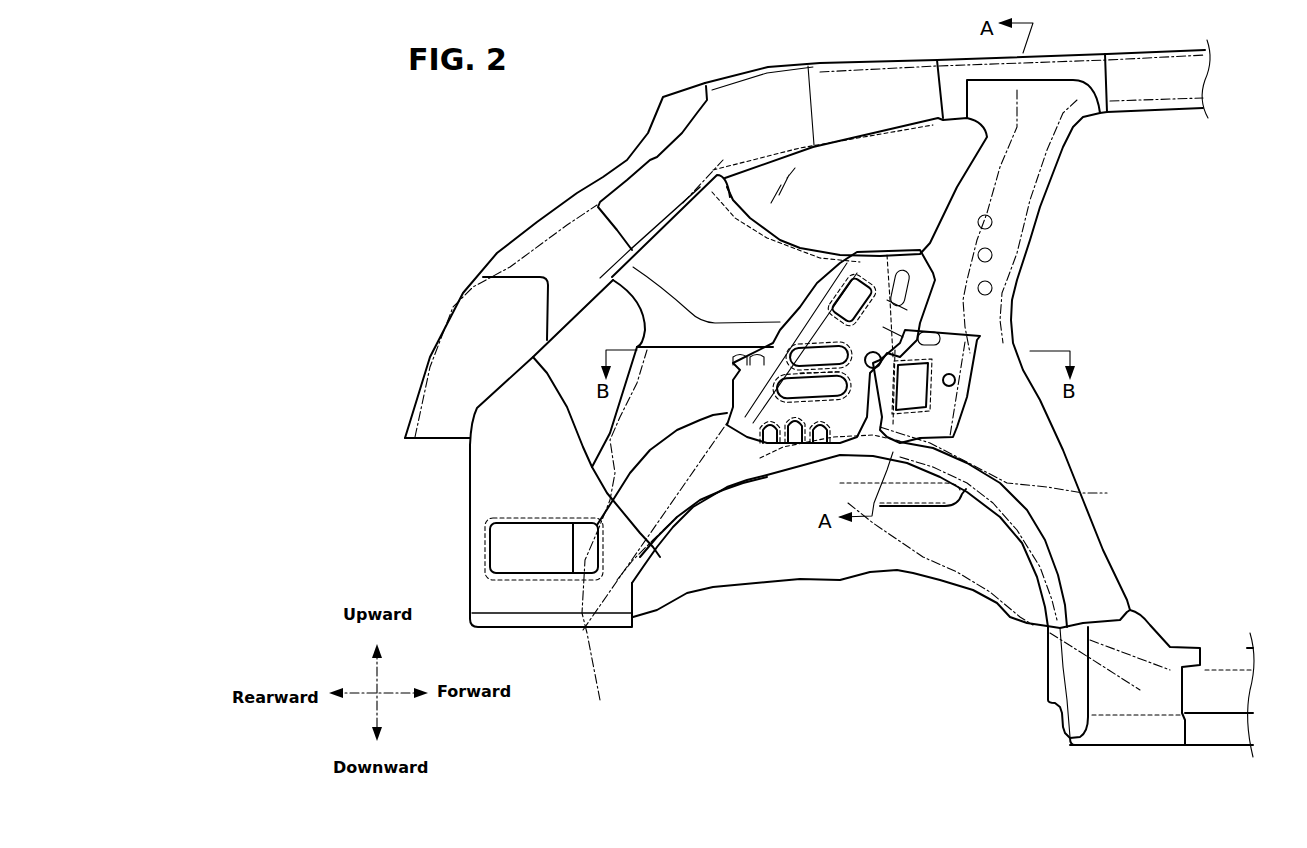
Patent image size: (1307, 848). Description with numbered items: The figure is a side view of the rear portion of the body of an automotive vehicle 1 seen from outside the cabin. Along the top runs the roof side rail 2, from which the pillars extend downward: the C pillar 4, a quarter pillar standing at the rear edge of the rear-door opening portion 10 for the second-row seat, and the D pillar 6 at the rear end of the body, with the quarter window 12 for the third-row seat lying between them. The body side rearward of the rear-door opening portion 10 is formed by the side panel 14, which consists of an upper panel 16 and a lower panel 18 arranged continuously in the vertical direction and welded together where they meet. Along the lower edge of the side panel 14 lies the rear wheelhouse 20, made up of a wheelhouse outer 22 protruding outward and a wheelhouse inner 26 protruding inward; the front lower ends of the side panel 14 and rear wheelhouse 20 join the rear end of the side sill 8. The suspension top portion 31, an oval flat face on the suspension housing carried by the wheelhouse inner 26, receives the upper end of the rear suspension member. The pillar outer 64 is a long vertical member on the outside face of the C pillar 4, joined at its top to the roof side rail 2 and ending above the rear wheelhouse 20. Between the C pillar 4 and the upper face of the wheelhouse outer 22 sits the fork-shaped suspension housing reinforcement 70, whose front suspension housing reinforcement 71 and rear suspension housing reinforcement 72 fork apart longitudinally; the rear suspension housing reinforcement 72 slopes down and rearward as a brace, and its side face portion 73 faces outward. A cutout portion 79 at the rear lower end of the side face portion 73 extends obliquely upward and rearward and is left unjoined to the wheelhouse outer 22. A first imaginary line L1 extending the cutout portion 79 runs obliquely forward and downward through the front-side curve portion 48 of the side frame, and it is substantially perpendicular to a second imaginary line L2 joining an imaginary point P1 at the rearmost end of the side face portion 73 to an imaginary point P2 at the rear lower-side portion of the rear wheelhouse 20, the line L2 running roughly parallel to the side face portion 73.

The automotive vehicle 1 is at (1265, 56).
The roof side rail 2 is at (1162, 65).
The C pillar 4 is at (1078, 161).
The D pillar 6 is at (567, 240).
The side sill 8 is at (1222, 733).
The rear-door opening portion 10 is at (1131, 309).
The quarter window 12 is at (888, 147).
The side panel 14 is at (383, 293).
The upper panel 16 is at (693, 292).
The lower panel 18 is at (643, 420).
The rear wheelhouse 20 is at (797, 645).
The wheelhouse outer 22 is at (693, 513).
The wheelhouse inner 26 is at (783, 560).
The suspension top portion 31 is at (1010, 466).
The front-side curve portion 48 is at (1140, 690).
The pillar outer 64 is at (1003, 243).
The suspension housing reinforcement 70 is at (1137, 395).
The front suspension housing reinforcement 71 is at (950, 400).
The rear suspension housing reinforcement 72 is at (975, 366).
The side face portion 73 is at (883, 277).
The cutout portion 79 is at (737, 443).
The imaginary point P1 is at (727, 420).
The imaginary point P2 is at (583, 630).
The first imaginary line L1 is at (903, 547).
The second imaginary line L2 is at (567, 657).